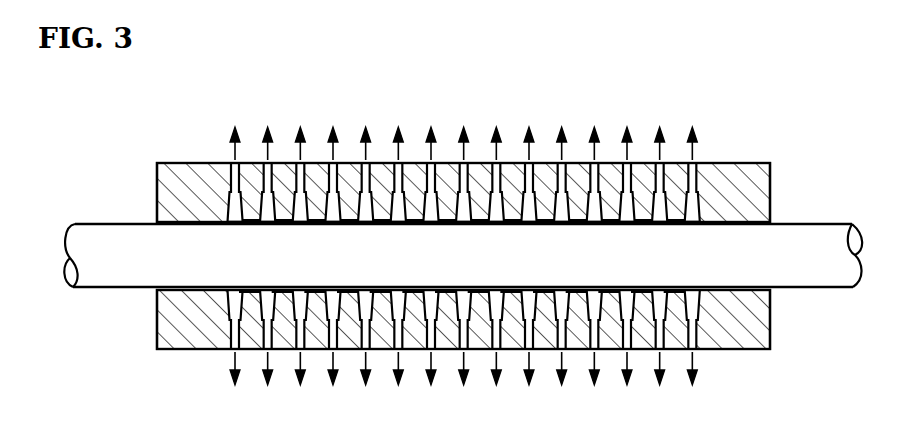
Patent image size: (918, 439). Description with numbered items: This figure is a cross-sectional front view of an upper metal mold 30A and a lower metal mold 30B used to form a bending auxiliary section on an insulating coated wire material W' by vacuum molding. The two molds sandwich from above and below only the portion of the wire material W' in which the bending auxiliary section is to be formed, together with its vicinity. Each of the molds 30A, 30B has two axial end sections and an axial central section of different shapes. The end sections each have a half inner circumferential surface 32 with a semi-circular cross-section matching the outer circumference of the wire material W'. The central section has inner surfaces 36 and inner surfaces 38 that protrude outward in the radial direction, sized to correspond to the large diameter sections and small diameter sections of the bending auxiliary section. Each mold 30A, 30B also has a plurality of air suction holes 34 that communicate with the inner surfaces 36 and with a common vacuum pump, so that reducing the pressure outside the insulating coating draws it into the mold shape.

The insulating coated wire material W' is at (463, 226).
The upper metal mold 30A is at (731, 160).
The lower metal mold 30B is at (736, 352).
The half inner circumferential surface 32 is at (705, 228).
The air suction holes 34 is at (424, 163).
The inner surfaces 36 is at (361, 192).
The inner surfaces 38 is at (351, 288).